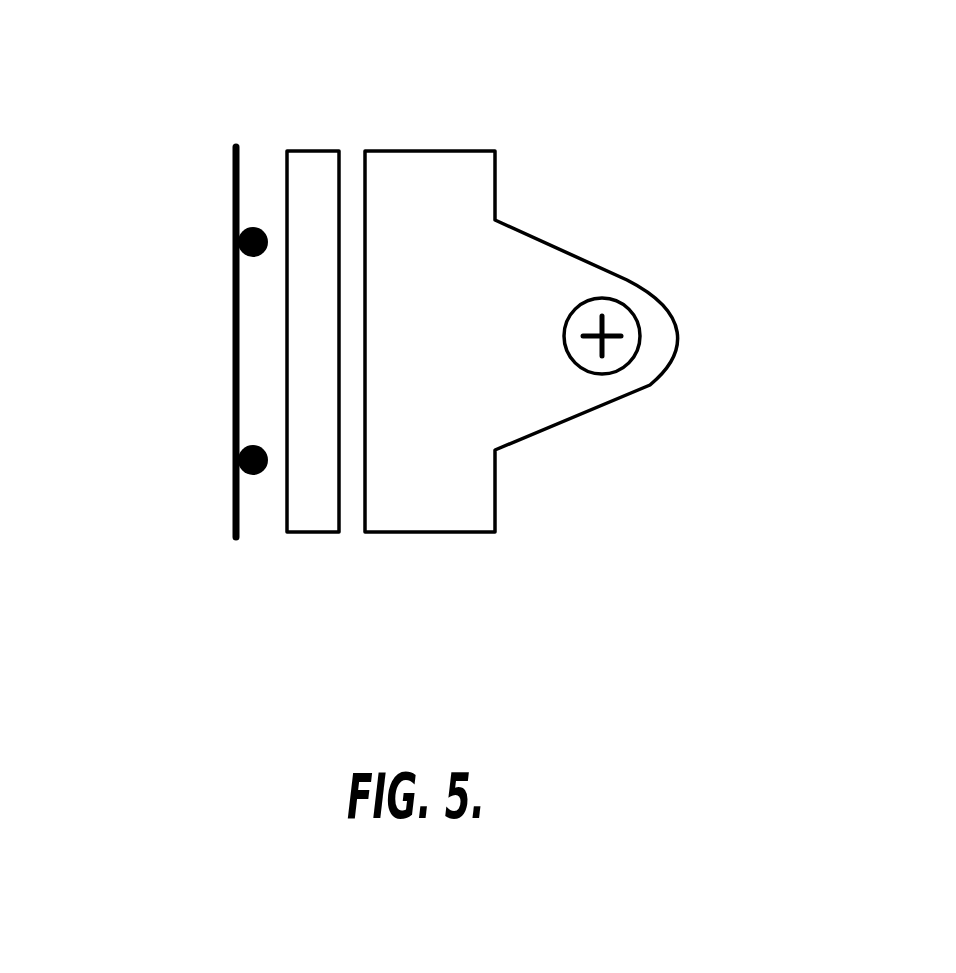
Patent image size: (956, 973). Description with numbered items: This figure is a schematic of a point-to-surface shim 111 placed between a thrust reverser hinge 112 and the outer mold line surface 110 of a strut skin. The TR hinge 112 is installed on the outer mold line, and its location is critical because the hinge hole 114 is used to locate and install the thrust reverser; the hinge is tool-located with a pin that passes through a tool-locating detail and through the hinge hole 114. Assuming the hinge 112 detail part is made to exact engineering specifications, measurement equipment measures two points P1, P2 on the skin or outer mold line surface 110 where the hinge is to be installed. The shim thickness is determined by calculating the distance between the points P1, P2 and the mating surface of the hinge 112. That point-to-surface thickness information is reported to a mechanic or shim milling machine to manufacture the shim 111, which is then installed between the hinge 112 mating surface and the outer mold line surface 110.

The outer mold line surface 110 is at (235, 525).
The point-to-surface shim 111 is at (330, 522).
The thrust reverser hinge 112 is at (515, 227).
The hinge hole 114 is at (618, 308).
The measured point P1 is at (255, 222).
The measured point P2 is at (236, 455).